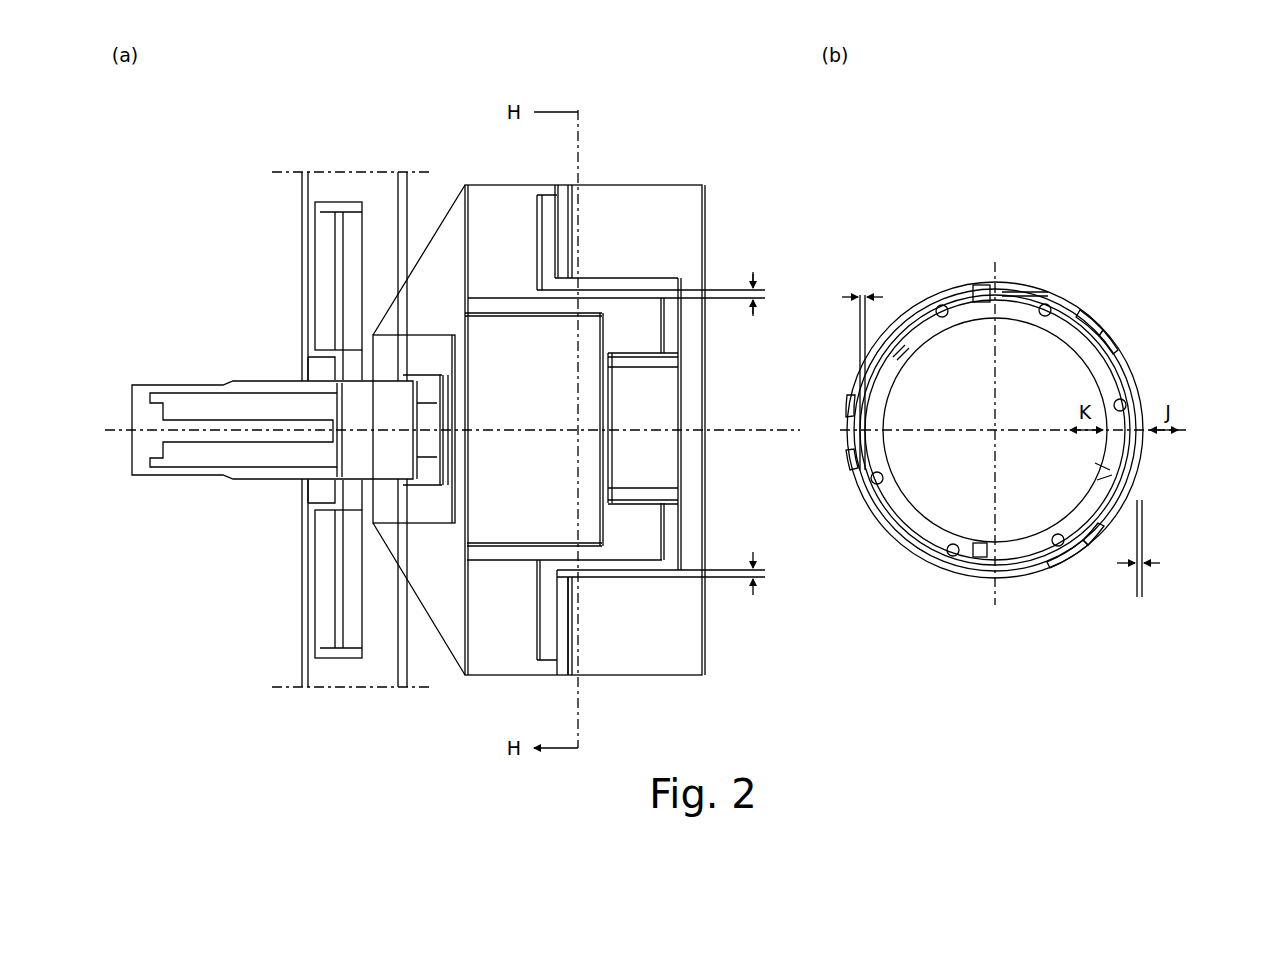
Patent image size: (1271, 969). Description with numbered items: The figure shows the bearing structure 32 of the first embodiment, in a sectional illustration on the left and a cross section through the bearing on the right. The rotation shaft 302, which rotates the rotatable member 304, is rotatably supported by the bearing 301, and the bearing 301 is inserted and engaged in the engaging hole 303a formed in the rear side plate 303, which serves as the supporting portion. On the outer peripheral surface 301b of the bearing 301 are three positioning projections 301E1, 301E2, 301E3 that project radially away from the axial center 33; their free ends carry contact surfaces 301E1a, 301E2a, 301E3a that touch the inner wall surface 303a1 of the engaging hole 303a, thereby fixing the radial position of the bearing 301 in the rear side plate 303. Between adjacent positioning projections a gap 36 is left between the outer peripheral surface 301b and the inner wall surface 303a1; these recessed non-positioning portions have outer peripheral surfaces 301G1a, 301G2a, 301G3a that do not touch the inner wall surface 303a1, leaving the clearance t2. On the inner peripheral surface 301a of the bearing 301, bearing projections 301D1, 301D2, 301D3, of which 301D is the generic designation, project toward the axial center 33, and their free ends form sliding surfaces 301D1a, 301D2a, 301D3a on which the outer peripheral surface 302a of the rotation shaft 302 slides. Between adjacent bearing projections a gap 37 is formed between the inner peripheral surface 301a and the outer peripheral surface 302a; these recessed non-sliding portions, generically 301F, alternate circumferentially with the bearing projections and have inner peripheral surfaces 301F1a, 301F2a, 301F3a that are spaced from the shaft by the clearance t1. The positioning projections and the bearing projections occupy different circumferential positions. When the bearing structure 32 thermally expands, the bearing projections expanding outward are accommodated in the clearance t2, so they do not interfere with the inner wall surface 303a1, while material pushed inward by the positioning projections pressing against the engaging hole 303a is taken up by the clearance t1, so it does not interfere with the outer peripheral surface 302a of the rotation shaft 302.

The bearing structure 32 is at (680, 127).
The axial center 33 is at (497, 427).
The gap 36 is at (945, 318).
The gap 37 is at (1040, 320).
The bearing 301 is at (670, 280).
The inner peripheral surface 301a is at (620, 298).
The outer peripheral surface 301b is at (647, 277).
The bearing projection 301D is at (625, 553).
The bearing projection 301D1 is at (900, 365).
The bearing projection 301D2 is at (1120, 410).
The bearing projection 301D3 is at (975, 545).
The sliding surface 301D1a is at (935, 300).
The sliding surface 301D2a is at (1145, 445).
The sliding surface 301D3a is at (960, 575).
The positioning projection 301E1 is at (1085, 318).
The positioning projection 301E2 is at (1088, 548).
The positioning projection 301E3 is at (850, 396).
The contact surface 301E1a is at (1112, 332).
The contact surface 301E2a is at (1035, 575).
The contact surface 301E3a is at (855, 460).
The non-sliding portion 301F is at (632, 298).
The inner peripheral surface of non-sliding portion 301F1a is at (1050, 300).
The inner peripheral surface of non-sliding portion 301F2a is at (1075, 555).
The inner peripheral surface of non-sliding portion 301F3a is at (880, 500).
The outer peripheral surface of non-positioning portion 301G1a is at (955, 290).
The outer peripheral surface of non-positioning portion 301G2a is at (1130, 400).
The outer peripheral surface of non-positioning portion 301G3a is at (632, 573).
The rotation shaft 302 is at (490, 300).
The outer peripheral surface 302a is at (503, 293).
The rear side plate 303 is at (567, 217).
The engaging hole 303a is at (563, 570).
The inner wall surface 303a1 is at (570, 297).
The rotatable member 304 is at (302, 262).
The clearance t1 is at (758, 295).
The clearance t2 is at (758, 575).